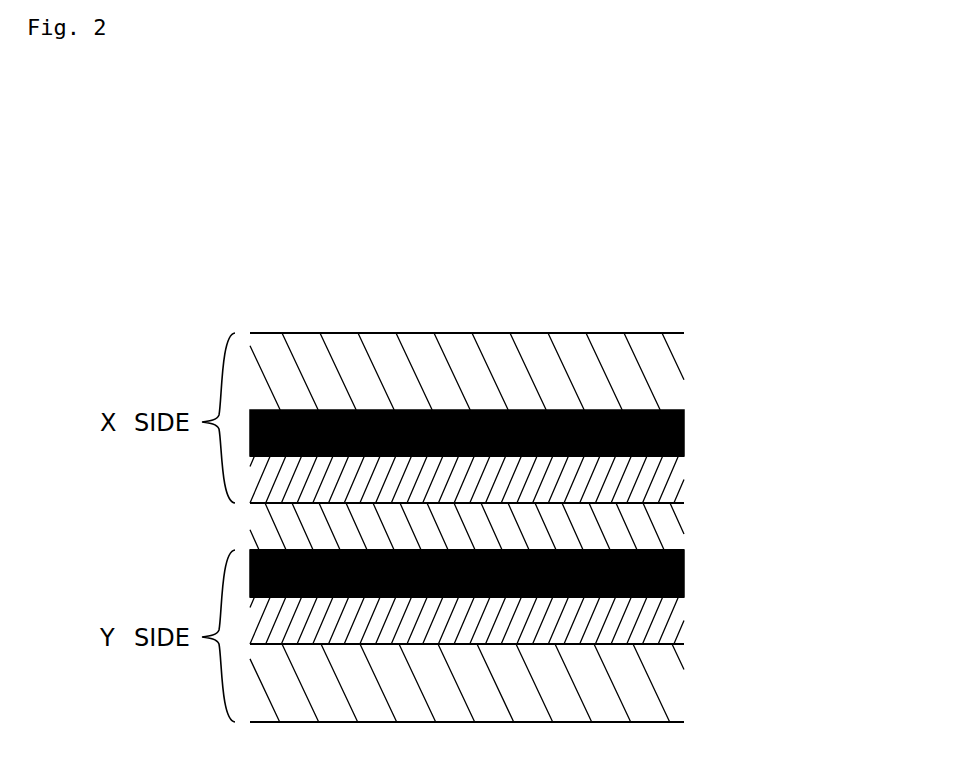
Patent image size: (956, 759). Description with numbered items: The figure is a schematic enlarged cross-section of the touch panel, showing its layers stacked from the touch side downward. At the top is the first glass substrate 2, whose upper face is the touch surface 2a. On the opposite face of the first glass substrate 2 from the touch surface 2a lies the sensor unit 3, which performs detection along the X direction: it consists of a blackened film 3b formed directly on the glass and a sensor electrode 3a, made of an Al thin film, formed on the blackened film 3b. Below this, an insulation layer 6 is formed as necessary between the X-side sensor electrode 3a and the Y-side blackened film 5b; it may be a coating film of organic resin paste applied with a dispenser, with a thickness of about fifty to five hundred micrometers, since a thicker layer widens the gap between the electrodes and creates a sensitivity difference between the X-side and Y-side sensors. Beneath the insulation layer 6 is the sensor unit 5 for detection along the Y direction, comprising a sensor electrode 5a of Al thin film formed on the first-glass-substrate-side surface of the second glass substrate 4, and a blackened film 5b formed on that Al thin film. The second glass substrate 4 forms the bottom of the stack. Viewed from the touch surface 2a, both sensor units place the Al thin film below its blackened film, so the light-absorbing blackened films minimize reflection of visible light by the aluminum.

The first glass substrate 2 is at (670, 365).
The touch surface 2a is at (570, 333).
The sensor unit 3 is at (538, 456).
The sensor electrode 3a is at (667, 484).
The blackened film 3b is at (684, 432).
The insulation layer 6 is at (665, 534).
The sensor unit 5 is at (541, 597).
The sensor electrode 5a is at (670, 628).
The blackened film 5b is at (684, 573).
The second glass substrate 4 is at (683, 696).